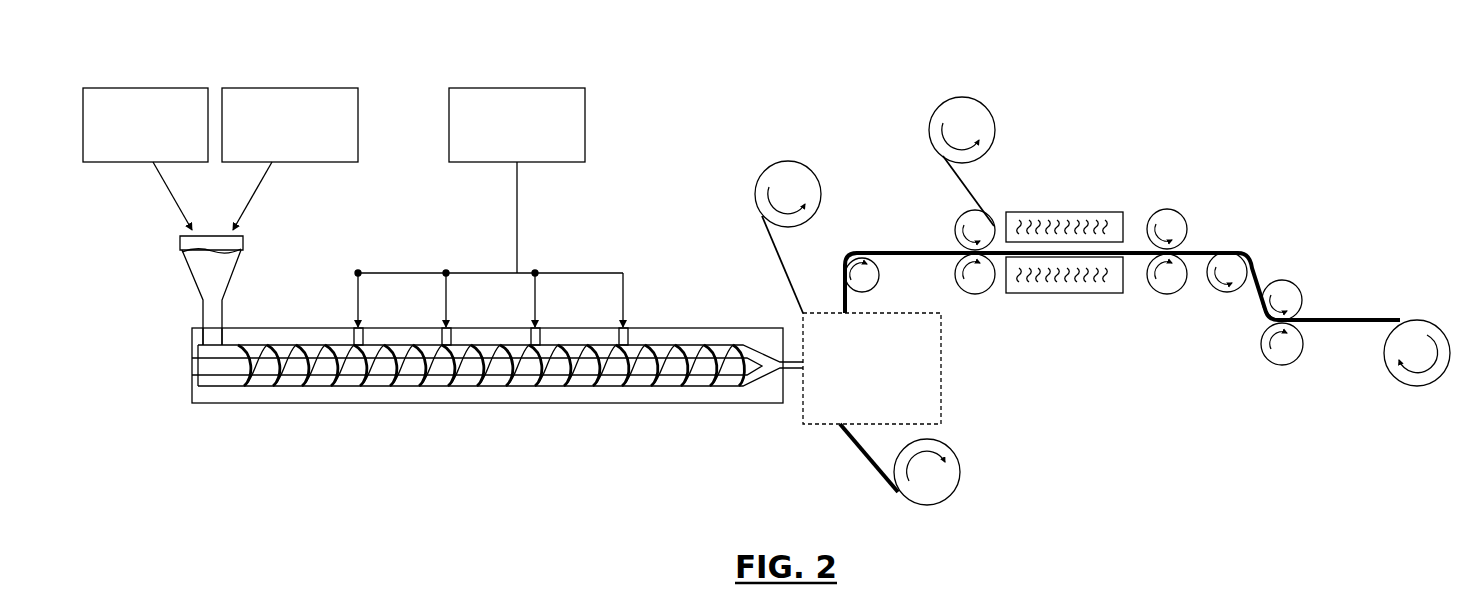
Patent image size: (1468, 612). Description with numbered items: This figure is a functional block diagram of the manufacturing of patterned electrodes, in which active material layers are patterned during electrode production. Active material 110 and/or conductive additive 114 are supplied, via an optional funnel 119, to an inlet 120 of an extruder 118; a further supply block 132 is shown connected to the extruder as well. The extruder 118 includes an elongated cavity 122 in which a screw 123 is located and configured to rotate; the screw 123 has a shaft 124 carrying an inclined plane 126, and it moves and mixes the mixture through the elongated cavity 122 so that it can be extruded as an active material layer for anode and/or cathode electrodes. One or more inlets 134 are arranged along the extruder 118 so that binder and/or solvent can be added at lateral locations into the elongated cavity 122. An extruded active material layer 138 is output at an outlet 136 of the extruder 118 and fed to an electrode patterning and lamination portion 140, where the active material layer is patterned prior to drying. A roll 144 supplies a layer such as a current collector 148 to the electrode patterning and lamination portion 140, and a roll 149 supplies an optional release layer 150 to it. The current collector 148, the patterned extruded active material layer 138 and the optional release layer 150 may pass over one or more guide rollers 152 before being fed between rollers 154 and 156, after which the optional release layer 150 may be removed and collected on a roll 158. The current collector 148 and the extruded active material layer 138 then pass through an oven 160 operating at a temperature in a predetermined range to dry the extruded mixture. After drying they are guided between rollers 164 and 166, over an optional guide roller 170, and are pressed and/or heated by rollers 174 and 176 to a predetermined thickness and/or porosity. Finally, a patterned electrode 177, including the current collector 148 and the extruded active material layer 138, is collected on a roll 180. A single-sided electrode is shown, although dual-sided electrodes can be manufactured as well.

The active material 110 is at (170, 88).
The conductive additive 114 is at (321, 88).
The additive supply 132 is at (511, 88).
The funnel 119 is at (232, 279).
The inlet 120 is at (222, 338).
The extruder 118 is at (248, 403).
The elongated cavity 122 is at (343, 386).
The screw 123 is at (491, 393).
The shaft 124 is at (213, 365).
The inclined plane 126 is at (612, 386).
The inlets 134 is at (630, 338).
The outlet 136 is at (777, 362).
The extruded active material layer 138 is at (795, 372).
The electrode patterning and lamination portion 140 is at (941, 363).
The roll 144 is at (960, 476).
The current collector 148 is at (852, 443).
The roll 149 is at (782, 161).
The release layer 150 is at (774, 252).
The guide rollers 152 is at (880, 279).
The roller 154 is at (957, 212).
The roller 156 is at (975, 294).
The roll 158 is at (940, 106).
The oven 160 is at (1046, 212).
The roller 164 is at (1167, 208).
The roller 166 is at (1155, 295).
The guide roller 170 is at (1228, 293).
The roller 174 is at (1284, 280).
The roller 176 is at (1284, 365).
The patterned electrode 177 is at (1354, 319).
The roll 180 is at (1410, 386).